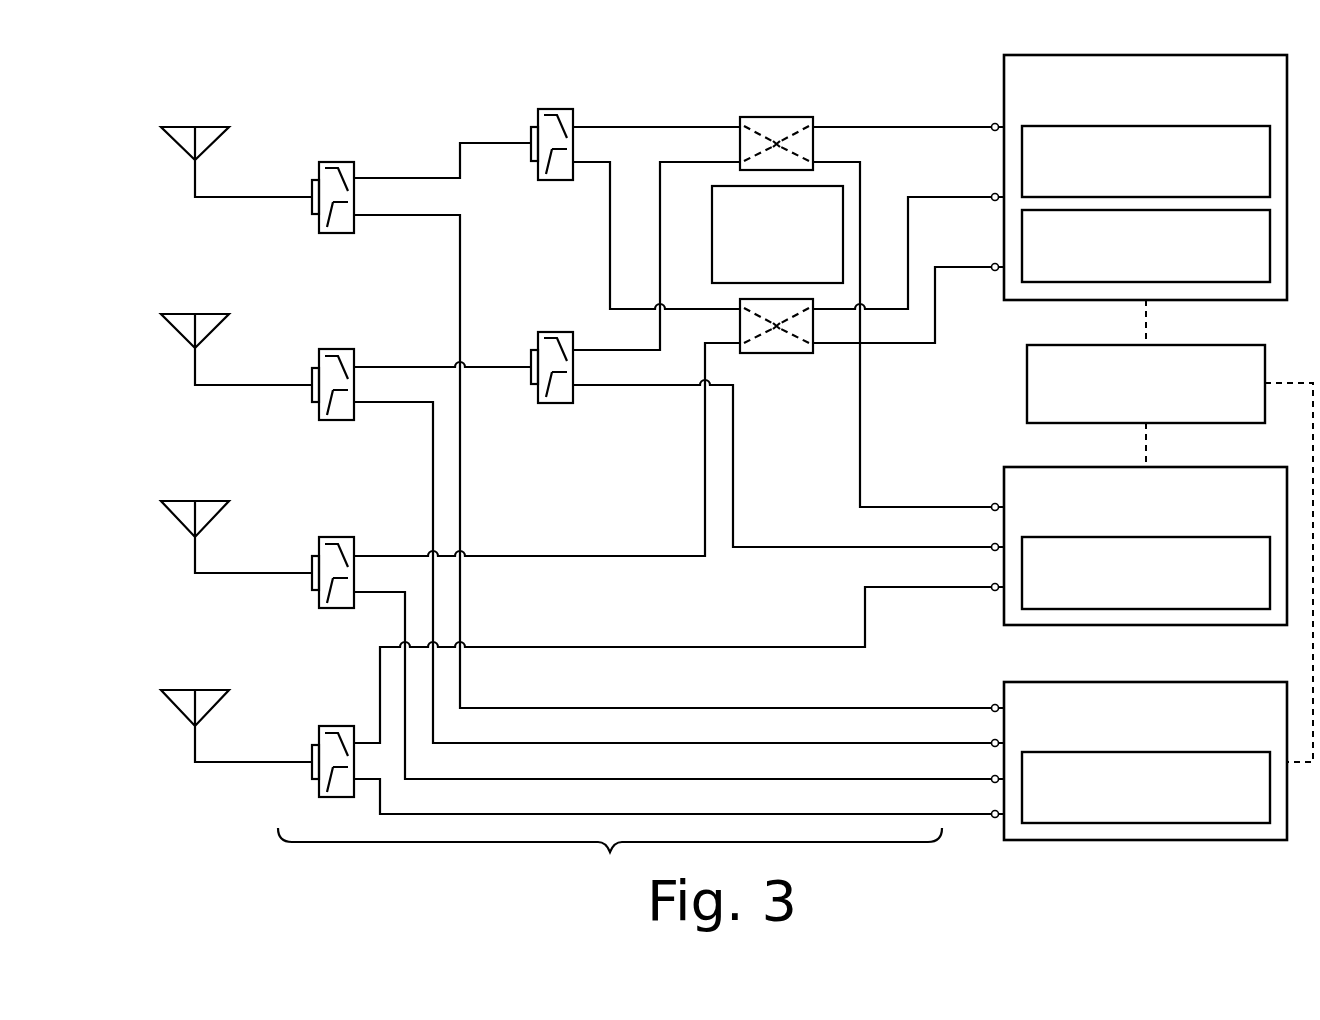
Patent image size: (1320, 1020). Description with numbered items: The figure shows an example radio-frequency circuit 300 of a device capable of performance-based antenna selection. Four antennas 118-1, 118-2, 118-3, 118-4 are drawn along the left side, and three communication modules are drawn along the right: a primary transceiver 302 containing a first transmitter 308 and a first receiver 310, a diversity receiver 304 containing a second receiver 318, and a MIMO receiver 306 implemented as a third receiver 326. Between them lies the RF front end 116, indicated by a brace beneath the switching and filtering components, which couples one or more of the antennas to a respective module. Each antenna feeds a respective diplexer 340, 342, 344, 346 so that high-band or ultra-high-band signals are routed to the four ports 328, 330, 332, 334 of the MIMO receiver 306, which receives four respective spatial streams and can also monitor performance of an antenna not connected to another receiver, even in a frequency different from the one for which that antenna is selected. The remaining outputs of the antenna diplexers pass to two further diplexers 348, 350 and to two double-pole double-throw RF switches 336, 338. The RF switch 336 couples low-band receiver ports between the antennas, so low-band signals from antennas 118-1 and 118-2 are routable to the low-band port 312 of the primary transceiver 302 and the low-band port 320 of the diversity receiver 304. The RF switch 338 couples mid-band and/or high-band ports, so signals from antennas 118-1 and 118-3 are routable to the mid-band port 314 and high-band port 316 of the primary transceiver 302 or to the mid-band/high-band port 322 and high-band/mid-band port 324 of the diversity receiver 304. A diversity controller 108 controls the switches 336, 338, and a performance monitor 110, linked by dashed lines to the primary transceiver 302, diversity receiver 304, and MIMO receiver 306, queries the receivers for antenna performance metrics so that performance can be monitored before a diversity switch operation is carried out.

The RF circuit 300 is at (187, 68).
The antenna 118-1 is at (165, 119).
The antenna 118-2 is at (165, 306).
The antenna 118-3 is at (165, 493).
The antenna 118-4 is at (165, 682).
The diplexer 340 is at (317, 154).
The diplexer 342 is at (317, 341).
The diplexer 344 is at (317, 529).
The diplexer 346 is at (317, 718).
The diplexer 348 is at (536, 102).
The diplexer 350 is at (536, 326).
The RF switch 336 is at (757, 110).
The RF switch 338 is at (757, 384).
The diversity controller 108 is at (758, 276).
The primary transceiver 302 is at (1127, 117).
The first transmitter 308 is at (1127, 187).
The first receiver 310 is at (1127, 272).
The performance monitor 110 is at (1127, 407).
The diversity receiver 304 is at (1127, 529).
The second receiver 318 is at (1127, 600).
The MIMO receiver 306 is at (1127, 744).
The third receiver 326 is at (1127, 814).
The low-band port 312 is at (955, 119).
The mid-band port 314 is at (955, 189).
The high-band port 316 is at (955, 259).
The low-band port 320 is at (955, 499).
The mid-band/high-band port 322 is at (955, 539).
The high-band/mid-band port 324 is at (955, 579).
The port 328 is at (955, 700).
The port 330 is at (955, 735).
The port 332 is at (955, 771).
The port 334 is at (955, 806).
The RF front end 116 is at (591, 877).